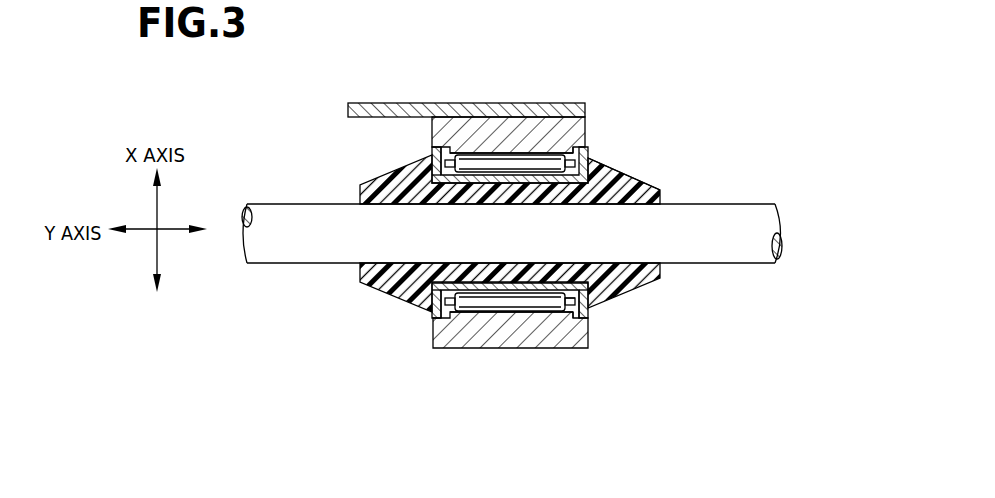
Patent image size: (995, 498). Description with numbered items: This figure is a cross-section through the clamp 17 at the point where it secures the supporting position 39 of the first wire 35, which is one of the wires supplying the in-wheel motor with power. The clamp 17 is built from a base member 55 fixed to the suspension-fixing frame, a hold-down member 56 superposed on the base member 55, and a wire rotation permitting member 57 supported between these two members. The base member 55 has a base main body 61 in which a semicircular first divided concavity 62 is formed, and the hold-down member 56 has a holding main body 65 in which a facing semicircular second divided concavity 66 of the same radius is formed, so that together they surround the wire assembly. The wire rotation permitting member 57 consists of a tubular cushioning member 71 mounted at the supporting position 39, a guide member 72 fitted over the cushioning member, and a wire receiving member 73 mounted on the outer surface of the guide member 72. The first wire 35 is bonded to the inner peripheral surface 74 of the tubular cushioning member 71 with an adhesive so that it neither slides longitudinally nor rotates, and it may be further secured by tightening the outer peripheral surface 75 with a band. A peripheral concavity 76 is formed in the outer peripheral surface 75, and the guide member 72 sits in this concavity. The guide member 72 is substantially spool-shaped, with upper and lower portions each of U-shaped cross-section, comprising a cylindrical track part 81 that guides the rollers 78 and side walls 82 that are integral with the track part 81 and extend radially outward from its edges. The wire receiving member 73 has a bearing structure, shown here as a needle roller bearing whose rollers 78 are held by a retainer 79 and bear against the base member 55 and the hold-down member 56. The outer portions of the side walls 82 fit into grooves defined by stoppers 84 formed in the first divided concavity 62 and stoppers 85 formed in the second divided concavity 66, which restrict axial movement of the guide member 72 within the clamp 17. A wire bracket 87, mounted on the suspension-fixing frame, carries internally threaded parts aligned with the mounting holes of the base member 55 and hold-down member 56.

The clamp 17 is at (420, 108).
The first wire 35 is at (270, 265).
The supporting position 39 is at (513, 236).
The base member 55 is at (497, 118).
The hold-down member 56 is at (492, 348).
The wire rotation permitting member 57 is at (474, 360).
The base main body 61 is at (545, 135).
The first divided concavity 62 is at (563, 116).
The holding main body 65 is at (514, 339).
The second divided concavity 66 is at (540, 323).
The tubular cushioning member 71 is at (630, 172).
The guide member 72 is at (574, 203).
The wire receiving member 73 is at (570, 323).
The inner peripheral surface 74 is at (412, 262).
The outer peripheral surface 75 is at (430, 162).
The peripheral concavity 76 is at (433, 157).
The roller 78 is at (477, 158).
The retainer 79 is at (435, 337).
The cylindrical track part 81 is at (473, 330).
The side wall 82 is at (428, 320).
The stopper 84 is at (437, 116).
The stopper 85 is at (442, 323).
The wire bracket 87 is at (370, 103).